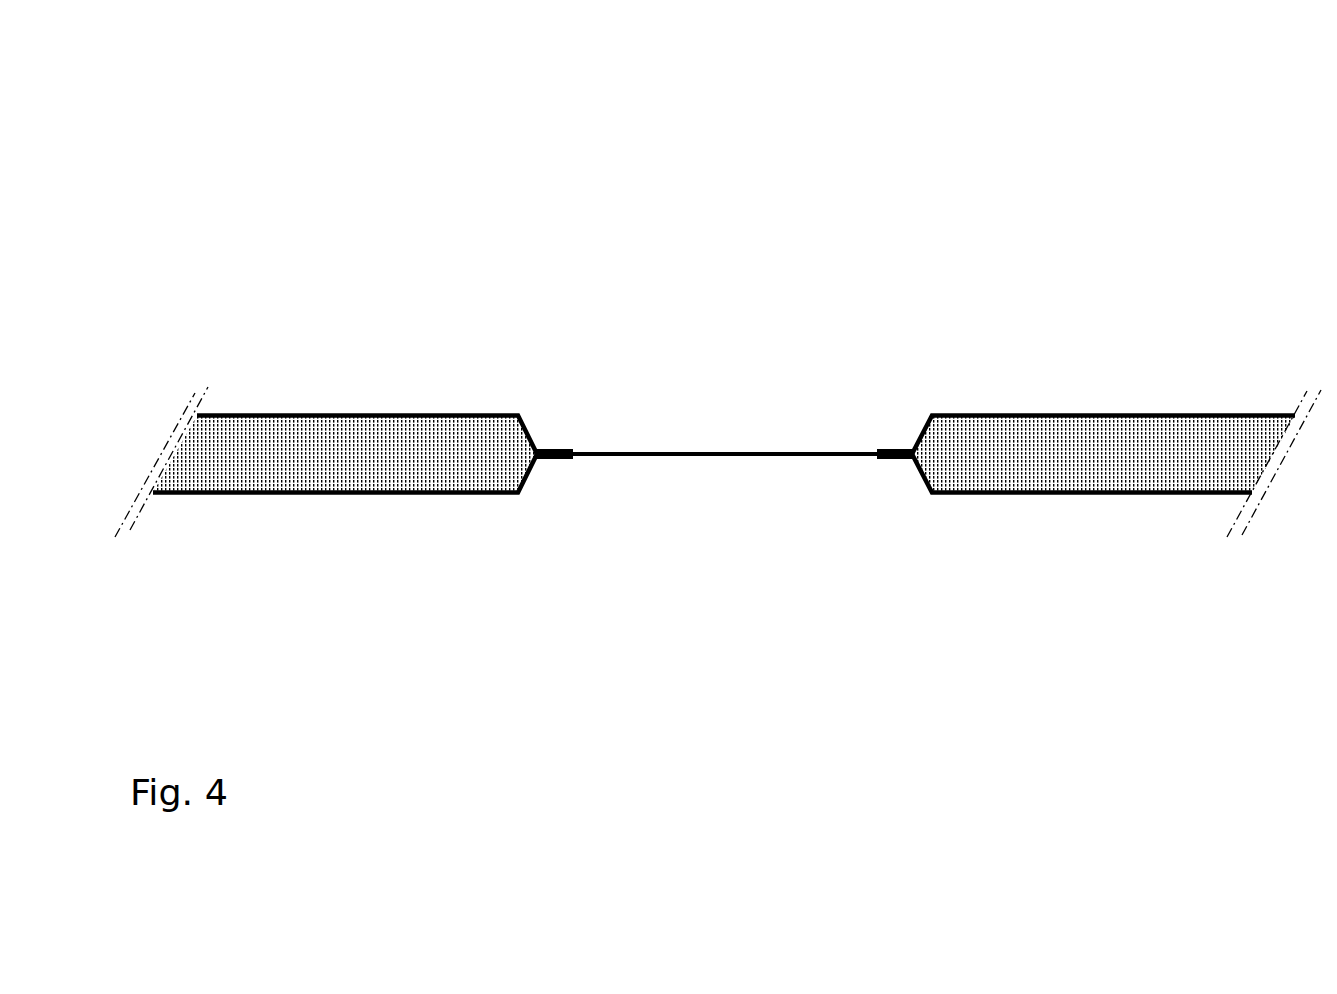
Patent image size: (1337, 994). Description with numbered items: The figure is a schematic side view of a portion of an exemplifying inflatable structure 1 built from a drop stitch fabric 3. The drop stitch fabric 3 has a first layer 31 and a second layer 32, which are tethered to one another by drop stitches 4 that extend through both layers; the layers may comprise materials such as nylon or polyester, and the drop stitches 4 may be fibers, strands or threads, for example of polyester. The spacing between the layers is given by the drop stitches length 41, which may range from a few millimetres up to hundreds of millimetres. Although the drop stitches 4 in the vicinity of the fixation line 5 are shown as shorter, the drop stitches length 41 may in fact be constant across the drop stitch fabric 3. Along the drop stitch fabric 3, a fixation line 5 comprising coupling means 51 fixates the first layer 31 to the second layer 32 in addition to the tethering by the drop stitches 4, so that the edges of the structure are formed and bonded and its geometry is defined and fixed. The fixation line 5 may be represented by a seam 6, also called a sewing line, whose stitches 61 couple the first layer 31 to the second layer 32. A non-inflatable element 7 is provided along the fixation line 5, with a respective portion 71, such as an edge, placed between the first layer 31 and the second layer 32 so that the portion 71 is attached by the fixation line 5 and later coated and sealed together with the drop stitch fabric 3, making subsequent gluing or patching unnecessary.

The inflatable structure 1 is at (313, 156).
The drop stitch fabric 3 is at (718, 465).
The first layer 31 is at (302, 404).
The second layer 32 is at (369, 501).
The drop stitches 4 is at (291, 469).
The drop stitches length 41 is at (438, 528).
The fixation line 5 is at (727, 413).
The coupling means 51 is at (727, 413).
The seam 6 is at (727, 413).
The stitches 61 is at (553, 448).
The non-inflatable element 7 is at (720, 480).
The portion of non-inflatable element 71 is at (556, 469).